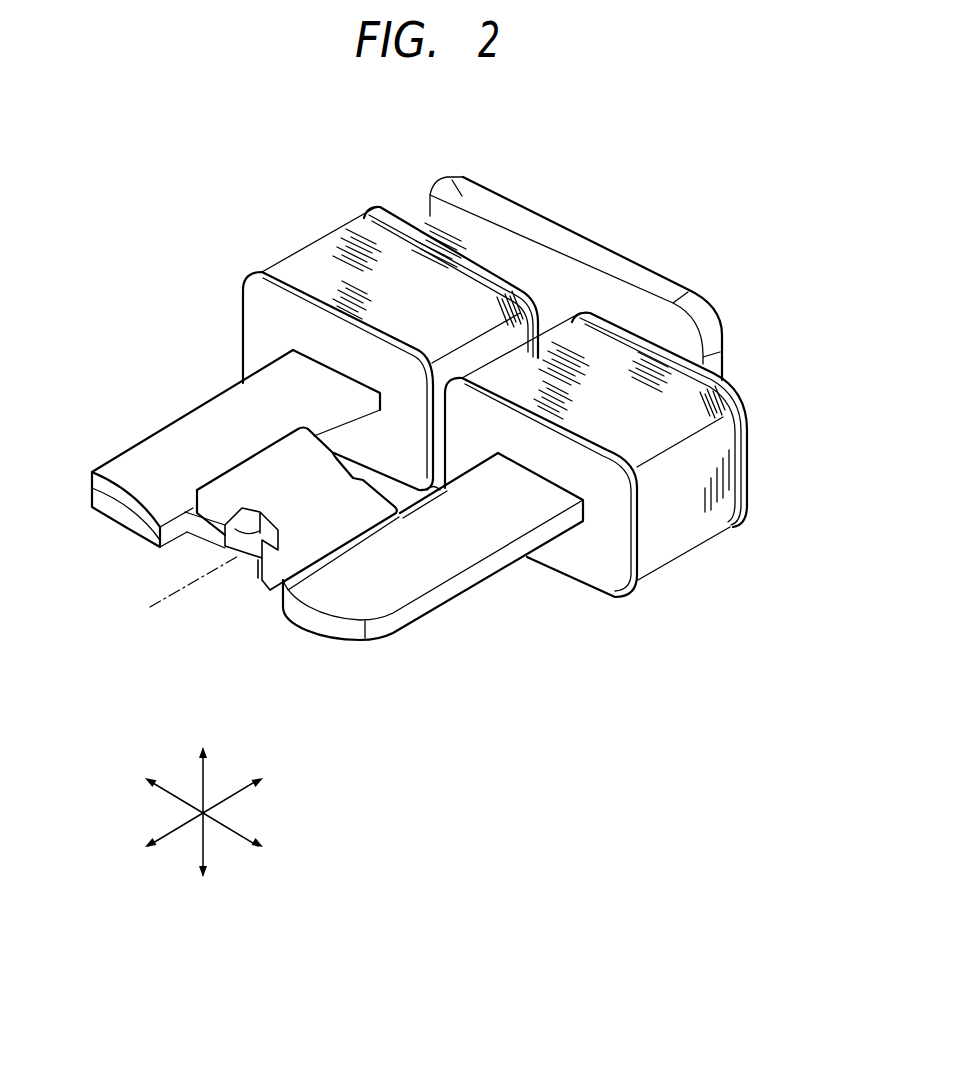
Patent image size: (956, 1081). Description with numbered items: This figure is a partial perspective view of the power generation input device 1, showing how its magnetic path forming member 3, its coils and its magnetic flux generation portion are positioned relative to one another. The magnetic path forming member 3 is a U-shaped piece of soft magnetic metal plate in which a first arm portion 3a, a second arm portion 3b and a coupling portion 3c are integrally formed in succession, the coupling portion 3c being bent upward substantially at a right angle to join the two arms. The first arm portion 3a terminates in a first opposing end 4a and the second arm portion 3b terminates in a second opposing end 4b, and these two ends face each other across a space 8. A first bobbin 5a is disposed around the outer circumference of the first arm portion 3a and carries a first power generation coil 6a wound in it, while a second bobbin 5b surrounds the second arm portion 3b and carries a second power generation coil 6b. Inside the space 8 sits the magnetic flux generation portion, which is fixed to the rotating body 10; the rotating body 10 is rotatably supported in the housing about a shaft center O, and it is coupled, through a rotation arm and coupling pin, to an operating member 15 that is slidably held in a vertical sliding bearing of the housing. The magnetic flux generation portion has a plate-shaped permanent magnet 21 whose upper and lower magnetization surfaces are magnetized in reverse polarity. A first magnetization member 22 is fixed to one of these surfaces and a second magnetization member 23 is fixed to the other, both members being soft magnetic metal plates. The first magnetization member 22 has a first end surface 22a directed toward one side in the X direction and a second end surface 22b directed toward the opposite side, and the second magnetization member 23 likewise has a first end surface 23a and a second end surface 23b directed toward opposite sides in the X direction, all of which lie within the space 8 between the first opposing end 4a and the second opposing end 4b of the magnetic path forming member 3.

The lens driving device 1 is at (548, 170).
The magnetic path forming member 3 is at (684, 269).
The first arm portion 3a is at (463, 553).
The second arm portion 3b is at (187, 430).
The coupling portion 3c is at (593, 253).
The first opposing end 4a is at (440, 490).
The second opposing end 4b is at (342, 423).
The first bobbin 5a is at (750, 453).
The second bobbin 5b is at (400, 210).
The first power generation coil 6a is at (676, 528).
The second power generation coil 6b is at (340, 297).
The space 8 is at (175, 545).
The rotating body 10 is at (226, 584).
The operating member 15 is at (340, 545).
The permanent magnet 21 is at (240, 558).
The first magnetization member 22 is at (285, 490).
The first end surface 22a is at (392, 527).
The second end surface 22b is at (190, 497).
The second magnetization member 23 is at (267, 590).
The first end surface 23a is at (93, 472).
The second end surface 23b is at (291, 614).